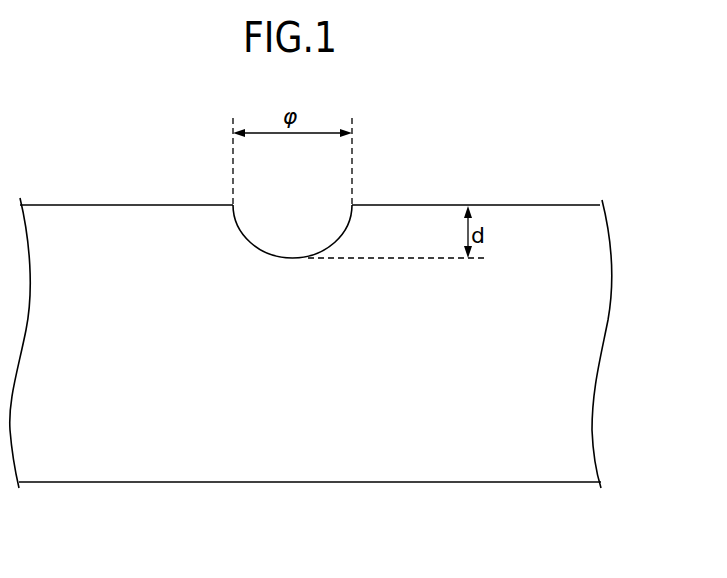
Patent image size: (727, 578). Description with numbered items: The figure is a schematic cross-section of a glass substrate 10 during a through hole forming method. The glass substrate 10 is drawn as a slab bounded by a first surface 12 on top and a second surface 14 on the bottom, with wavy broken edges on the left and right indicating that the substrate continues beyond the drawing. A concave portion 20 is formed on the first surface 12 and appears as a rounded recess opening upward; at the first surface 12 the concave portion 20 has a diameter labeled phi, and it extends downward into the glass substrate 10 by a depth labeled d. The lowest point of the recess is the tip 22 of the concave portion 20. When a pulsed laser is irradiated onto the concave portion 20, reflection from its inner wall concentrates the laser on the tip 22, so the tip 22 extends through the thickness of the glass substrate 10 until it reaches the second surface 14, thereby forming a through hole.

The glass substrate 10 is at (580, 336).
The first surface 12 is at (103, 205).
The second surface 14 is at (100, 482).
The concave portion 20 is at (343, 226).
The tip 22 is at (293, 259).